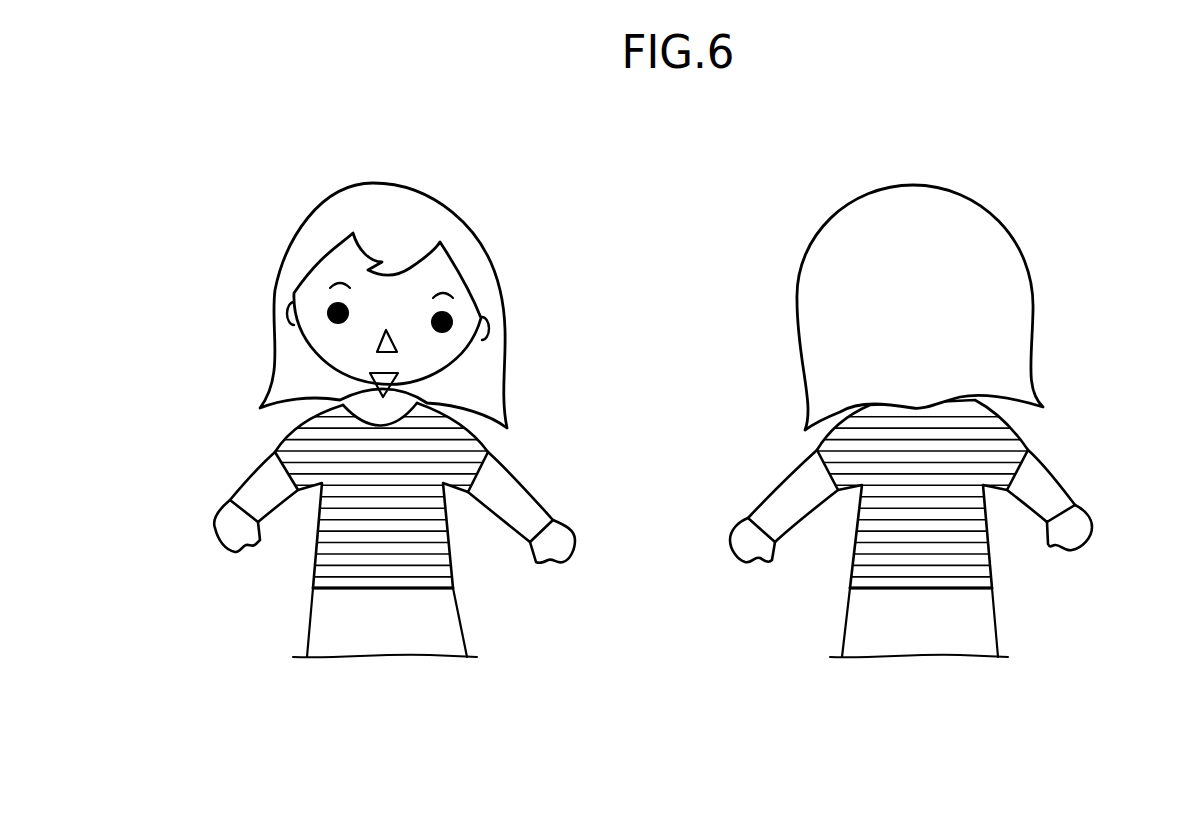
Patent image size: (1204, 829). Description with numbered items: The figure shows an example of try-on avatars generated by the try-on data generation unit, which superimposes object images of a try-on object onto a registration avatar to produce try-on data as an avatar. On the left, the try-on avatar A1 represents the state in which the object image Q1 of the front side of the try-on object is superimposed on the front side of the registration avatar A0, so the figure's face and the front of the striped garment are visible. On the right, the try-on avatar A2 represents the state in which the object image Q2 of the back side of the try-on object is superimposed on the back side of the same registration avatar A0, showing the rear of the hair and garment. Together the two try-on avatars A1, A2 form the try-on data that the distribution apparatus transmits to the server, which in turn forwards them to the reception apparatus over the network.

The registration avatar A0 is at (493, 230).
The try-on avatar A1 is at (271, 243).
The try-on avatar A2 is at (809, 229).
The object image Q1 is at (467, 455).
The object image Q2 is at (995, 451).